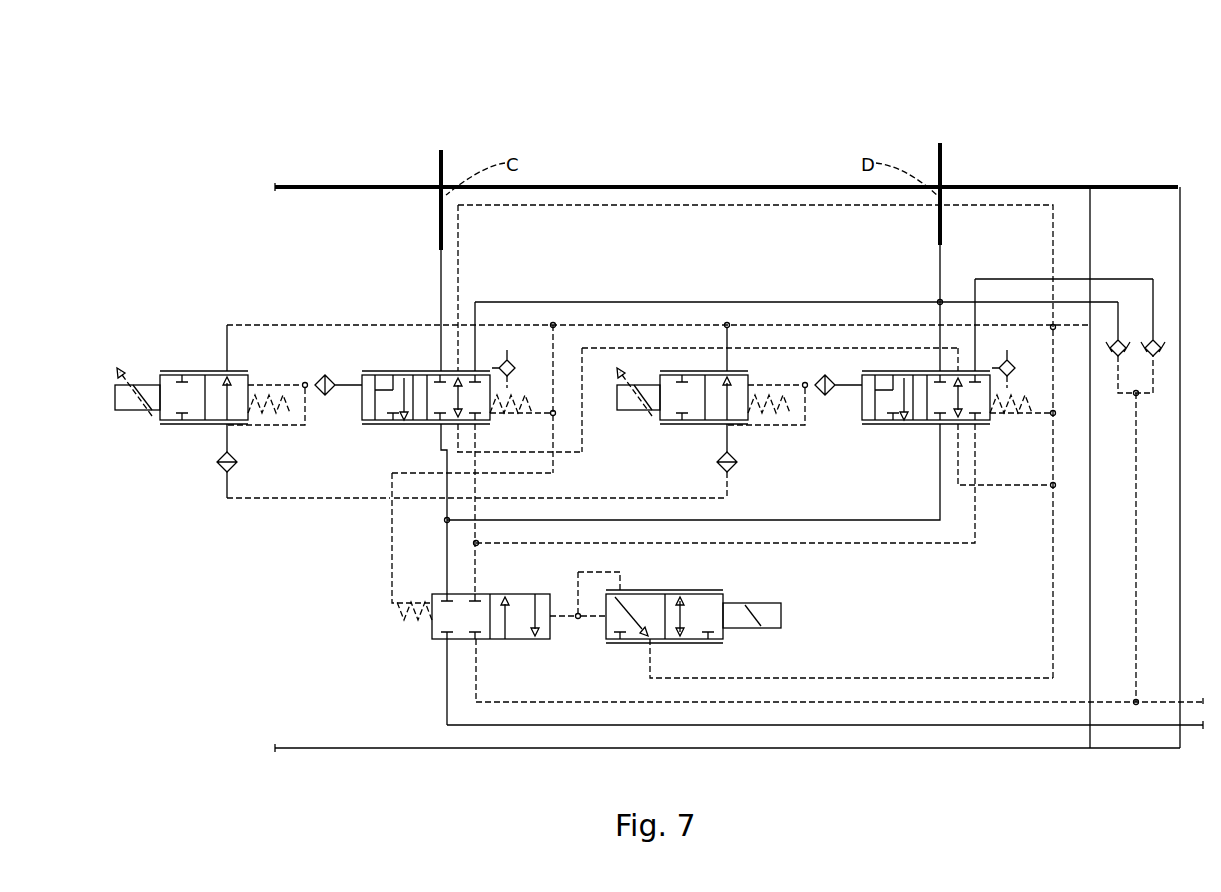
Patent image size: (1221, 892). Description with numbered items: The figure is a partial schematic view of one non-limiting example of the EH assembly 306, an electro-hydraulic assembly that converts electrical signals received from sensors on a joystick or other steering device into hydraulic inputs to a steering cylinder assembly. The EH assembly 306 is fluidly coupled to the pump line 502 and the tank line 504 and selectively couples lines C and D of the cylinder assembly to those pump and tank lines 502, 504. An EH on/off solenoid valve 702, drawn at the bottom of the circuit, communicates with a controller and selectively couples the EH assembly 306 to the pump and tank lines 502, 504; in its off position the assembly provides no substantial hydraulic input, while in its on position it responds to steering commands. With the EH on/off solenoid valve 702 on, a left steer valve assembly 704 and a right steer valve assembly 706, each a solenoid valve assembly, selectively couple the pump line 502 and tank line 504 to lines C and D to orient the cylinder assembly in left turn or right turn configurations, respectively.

The EH assembly 306 is at (1044, 158).
The left steer valve assembly 704 is at (282, 472).
The right steer valve assembly 706 is at (889, 468).
The EH on/off solenoid valve 702 is at (722, 657).
The pump line 502 is at (1203, 732).
The tank line 504 is at (1153, 710).